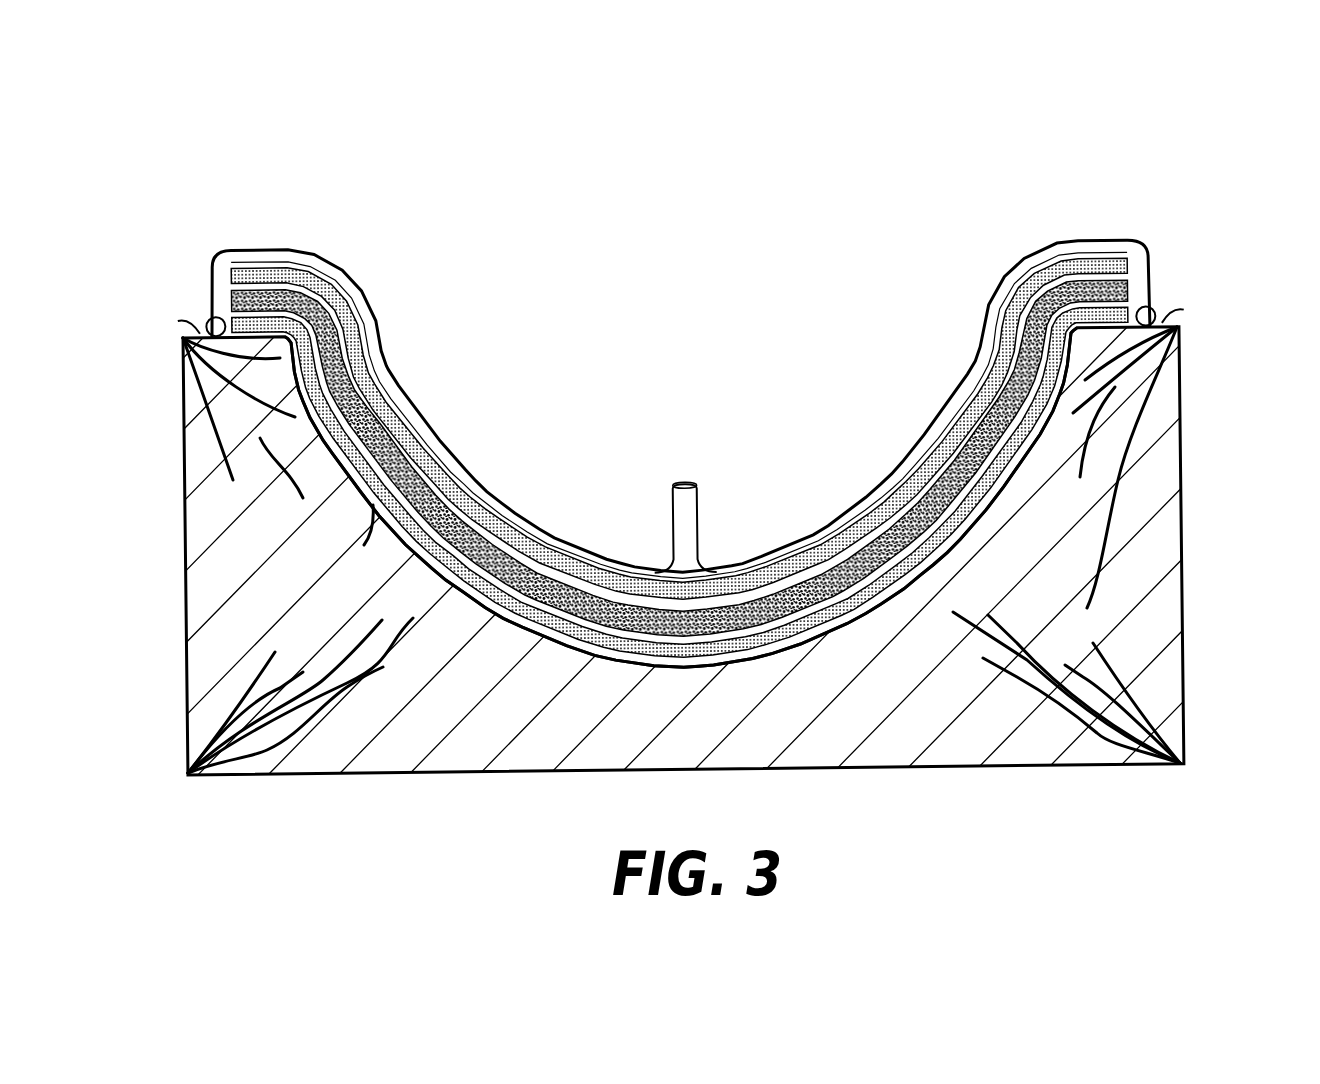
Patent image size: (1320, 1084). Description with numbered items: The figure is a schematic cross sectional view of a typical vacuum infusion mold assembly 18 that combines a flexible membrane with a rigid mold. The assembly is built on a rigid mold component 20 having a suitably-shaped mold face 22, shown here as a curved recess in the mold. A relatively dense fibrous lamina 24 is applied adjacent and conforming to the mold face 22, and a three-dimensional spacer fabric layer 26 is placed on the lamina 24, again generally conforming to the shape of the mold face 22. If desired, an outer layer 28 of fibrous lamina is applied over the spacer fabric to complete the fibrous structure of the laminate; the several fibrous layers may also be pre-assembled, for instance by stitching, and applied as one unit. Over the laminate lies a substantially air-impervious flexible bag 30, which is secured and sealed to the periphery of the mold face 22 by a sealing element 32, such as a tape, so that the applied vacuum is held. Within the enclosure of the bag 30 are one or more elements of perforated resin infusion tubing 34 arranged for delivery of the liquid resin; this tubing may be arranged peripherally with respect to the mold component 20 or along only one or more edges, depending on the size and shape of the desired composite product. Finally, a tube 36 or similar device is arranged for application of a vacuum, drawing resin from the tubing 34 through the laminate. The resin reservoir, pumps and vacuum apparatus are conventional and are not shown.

The vacuum infusion mold assembly 18 is at (412, 804).
The rigid mold component 20 is at (912, 676).
The mold face 22 is at (436, 578).
The fibrous lamina 24 is at (423, 532).
The three-dimensional spacer fabric layer 26 is at (397, 463).
The outer layer 28 is at (383, 400).
The flexible bag 30 is at (363, 348).
The sealing element 32 is at (197, 330).
The perforated resin infusion tubing 34 is at (210, 325).
The tube 36 is at (696, 517).